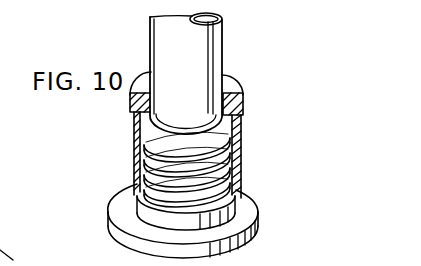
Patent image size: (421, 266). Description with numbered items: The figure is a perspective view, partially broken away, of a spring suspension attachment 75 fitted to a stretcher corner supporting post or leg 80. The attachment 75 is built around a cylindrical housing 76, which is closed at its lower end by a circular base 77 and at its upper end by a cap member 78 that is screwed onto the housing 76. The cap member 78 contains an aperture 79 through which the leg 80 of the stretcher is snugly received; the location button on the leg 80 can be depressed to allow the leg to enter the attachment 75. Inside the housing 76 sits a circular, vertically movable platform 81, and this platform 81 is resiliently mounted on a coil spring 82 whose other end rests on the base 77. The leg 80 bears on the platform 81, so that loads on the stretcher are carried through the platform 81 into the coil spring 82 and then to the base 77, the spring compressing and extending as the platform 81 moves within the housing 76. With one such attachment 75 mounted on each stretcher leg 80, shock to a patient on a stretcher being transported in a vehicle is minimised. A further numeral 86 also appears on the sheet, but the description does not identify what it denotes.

The spring suspension attachment 75 is at (279, 148).
The cylindrical housing 76 is at (138, 154).
The circular base 77 is at (247, 195).
The cap member 78 is at (236, 92).
The aperture 79 is at (224, 80).
The leg 80 is at (218, 35).
The platform 81 is at (140, 132).
The coil spring 82 is at (163, 189).
The base member 86 is at (67, 256).